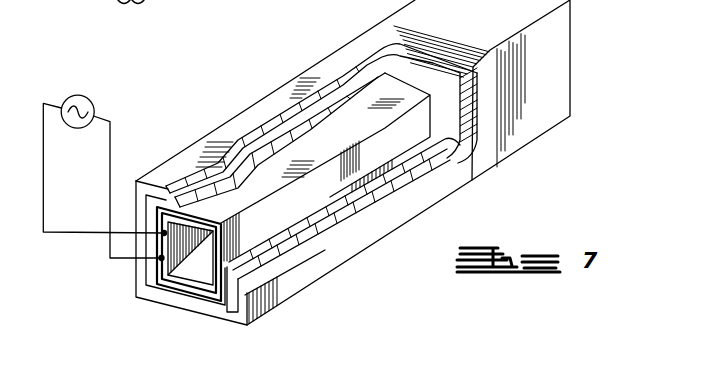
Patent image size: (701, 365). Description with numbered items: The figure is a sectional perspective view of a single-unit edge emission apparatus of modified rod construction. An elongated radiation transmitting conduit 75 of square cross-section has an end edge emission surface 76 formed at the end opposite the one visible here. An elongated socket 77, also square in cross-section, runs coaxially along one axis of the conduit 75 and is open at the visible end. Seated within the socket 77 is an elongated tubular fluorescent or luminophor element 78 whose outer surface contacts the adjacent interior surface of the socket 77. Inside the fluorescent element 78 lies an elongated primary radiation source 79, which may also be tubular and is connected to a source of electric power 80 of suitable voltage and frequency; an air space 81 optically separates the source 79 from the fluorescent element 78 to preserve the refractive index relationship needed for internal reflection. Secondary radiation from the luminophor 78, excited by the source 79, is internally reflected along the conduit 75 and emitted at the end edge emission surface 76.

The radiation transmitting conduit 75 is at (273, 98).
The end edge emission surface 76 is at (572, 79).
The socket 77 is at (432, 163).
The fluorescent element 78 is at (193, 299).
The primary radiation source 79 is at (173, 280).
The source of electric power 80 is at (85, 97).
The air space 81 is at (225, 297).